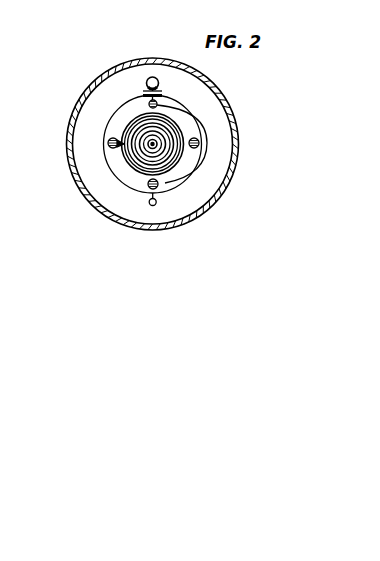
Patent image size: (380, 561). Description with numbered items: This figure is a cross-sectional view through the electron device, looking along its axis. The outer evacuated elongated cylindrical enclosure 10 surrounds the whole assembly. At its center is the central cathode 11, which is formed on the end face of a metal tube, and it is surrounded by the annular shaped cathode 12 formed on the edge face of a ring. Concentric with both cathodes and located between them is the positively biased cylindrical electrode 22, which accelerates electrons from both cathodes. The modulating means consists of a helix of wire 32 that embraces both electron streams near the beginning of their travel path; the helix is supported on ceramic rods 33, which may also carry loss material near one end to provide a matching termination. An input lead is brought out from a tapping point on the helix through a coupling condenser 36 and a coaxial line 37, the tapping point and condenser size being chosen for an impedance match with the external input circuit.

The elongated cylindrical enclosure 10 is at (123, 230).
The central cathode 11 is at (158, 152).
The annular shaped cathode 12 is at (133, 152).
The cylindrical electrode 22 is at (163, 158).
The helix of wire 32 is at (160, 150).
The ceramic rods 33 is at (183, 131).
The coupling condenser 36 is at (163, 95).
The coaxial line 37 is at (152, 77).